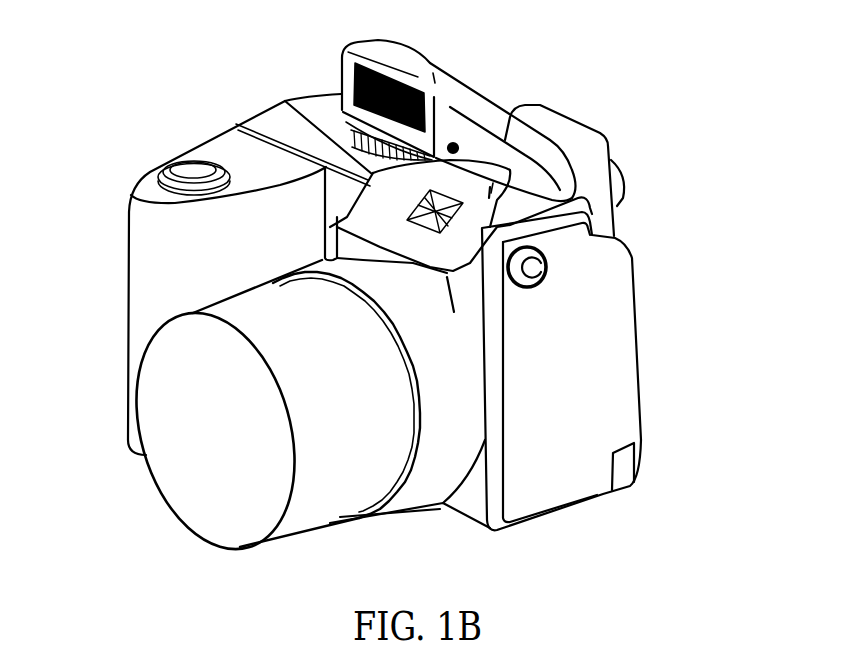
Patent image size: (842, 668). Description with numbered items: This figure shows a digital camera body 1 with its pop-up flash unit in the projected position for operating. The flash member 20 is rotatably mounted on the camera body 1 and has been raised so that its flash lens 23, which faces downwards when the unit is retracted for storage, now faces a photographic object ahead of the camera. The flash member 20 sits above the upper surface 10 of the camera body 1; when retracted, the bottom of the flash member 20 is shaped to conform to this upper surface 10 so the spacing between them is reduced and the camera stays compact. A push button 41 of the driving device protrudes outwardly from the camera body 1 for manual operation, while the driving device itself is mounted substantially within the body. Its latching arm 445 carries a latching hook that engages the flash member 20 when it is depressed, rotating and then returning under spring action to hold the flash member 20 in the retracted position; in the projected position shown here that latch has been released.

The digital camera body 1 is at (593, 357).
The upper surface 10 is at (345, 223).
The flash member 20 is at (463, 100).
The flash lens 23 is at (355, 86).
The push button 41 is at (545, 268).
The latching arm 445 is at (606, 142).